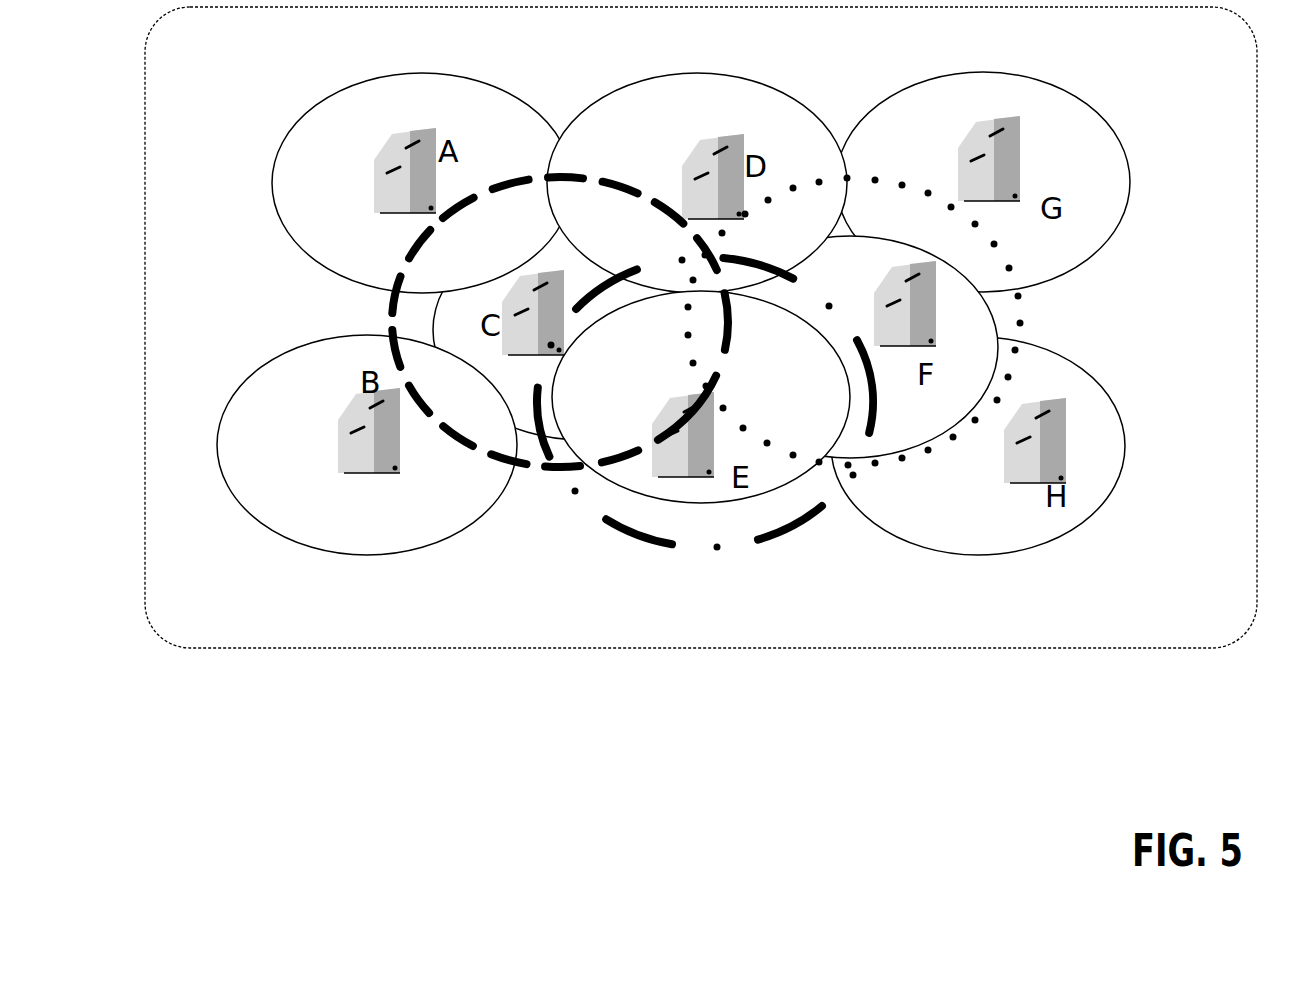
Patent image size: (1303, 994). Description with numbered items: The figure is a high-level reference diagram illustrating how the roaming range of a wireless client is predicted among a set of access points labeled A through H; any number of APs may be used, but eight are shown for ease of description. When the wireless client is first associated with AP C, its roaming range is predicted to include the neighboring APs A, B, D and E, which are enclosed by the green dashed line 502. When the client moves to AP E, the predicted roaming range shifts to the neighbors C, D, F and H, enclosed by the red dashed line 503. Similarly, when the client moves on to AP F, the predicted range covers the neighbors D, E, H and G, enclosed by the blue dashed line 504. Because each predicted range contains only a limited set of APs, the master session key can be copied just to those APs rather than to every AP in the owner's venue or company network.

The green dashed line 502 is at (551, 126).
The red dashed line 503 is at (773, 541).
The blue dashed line 504 is at (1022, 303).